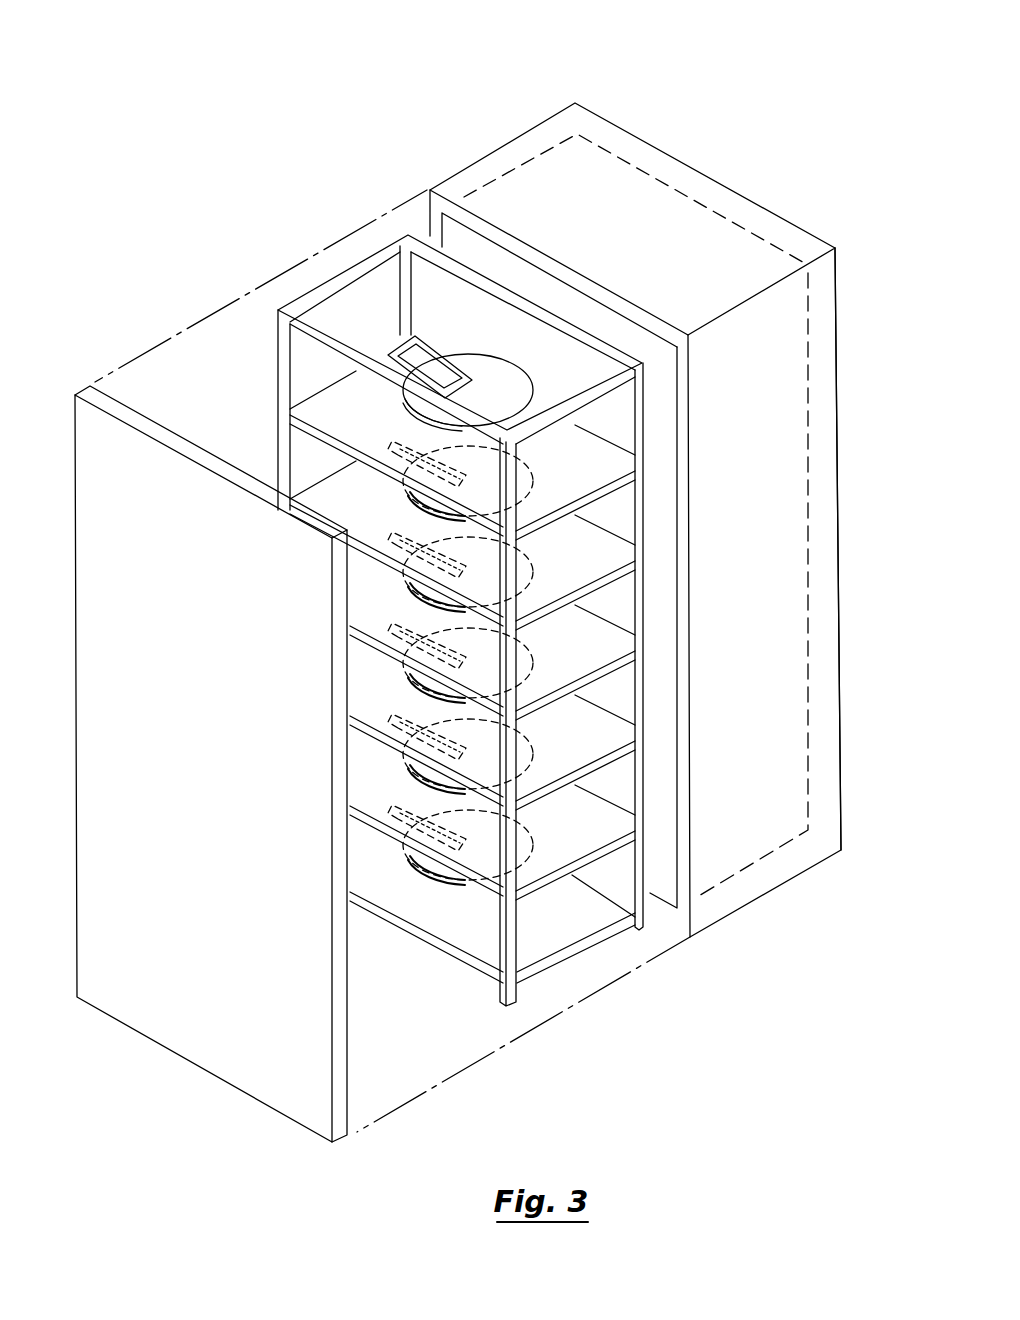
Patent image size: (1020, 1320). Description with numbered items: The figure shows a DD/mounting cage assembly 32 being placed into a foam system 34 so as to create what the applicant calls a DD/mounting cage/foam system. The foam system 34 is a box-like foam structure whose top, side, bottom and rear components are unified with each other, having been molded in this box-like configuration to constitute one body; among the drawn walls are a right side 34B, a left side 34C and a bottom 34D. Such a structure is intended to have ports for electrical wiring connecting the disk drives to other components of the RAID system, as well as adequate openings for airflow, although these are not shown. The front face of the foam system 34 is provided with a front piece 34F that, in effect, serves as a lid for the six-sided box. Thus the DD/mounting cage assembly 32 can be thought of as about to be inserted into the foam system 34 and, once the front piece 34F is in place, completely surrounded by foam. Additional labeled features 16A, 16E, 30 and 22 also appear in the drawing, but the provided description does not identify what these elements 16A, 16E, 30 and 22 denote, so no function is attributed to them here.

The foam system 34 is at (507, 566).
The left side 34C is at (468, 167).
The right side 34B is at (797, 440).
The bottom 34D is at (757, 903).
The front piece 34F is at (178, 528).
The top panel opening 16A is at (752, 283).
The side edge of housing 16E is at (846, 350).
The rack frame posts 30 is at (637, 568).
The DD/mounting cage assembly 32 is at (567, 927).
The wafers 22 is at (430, 843).